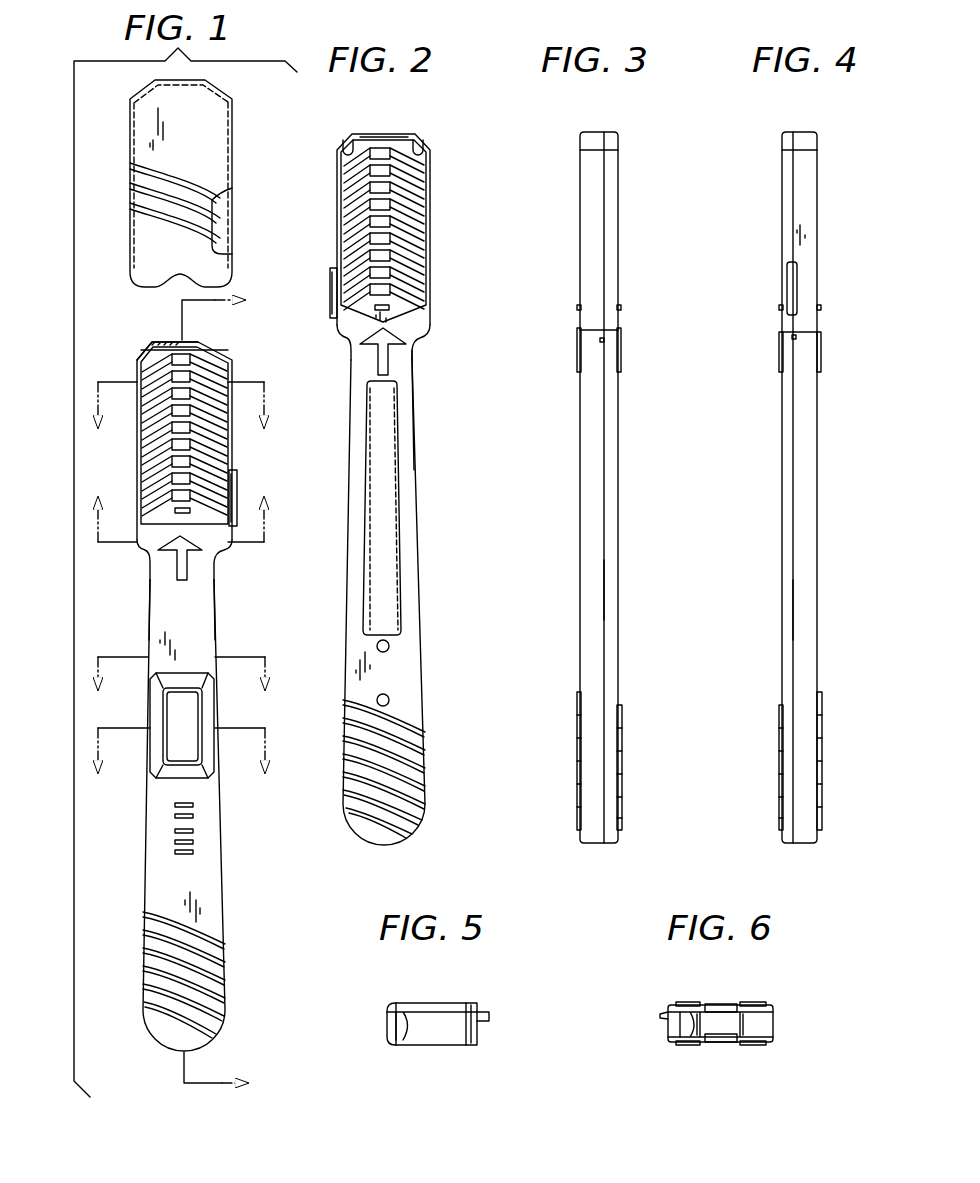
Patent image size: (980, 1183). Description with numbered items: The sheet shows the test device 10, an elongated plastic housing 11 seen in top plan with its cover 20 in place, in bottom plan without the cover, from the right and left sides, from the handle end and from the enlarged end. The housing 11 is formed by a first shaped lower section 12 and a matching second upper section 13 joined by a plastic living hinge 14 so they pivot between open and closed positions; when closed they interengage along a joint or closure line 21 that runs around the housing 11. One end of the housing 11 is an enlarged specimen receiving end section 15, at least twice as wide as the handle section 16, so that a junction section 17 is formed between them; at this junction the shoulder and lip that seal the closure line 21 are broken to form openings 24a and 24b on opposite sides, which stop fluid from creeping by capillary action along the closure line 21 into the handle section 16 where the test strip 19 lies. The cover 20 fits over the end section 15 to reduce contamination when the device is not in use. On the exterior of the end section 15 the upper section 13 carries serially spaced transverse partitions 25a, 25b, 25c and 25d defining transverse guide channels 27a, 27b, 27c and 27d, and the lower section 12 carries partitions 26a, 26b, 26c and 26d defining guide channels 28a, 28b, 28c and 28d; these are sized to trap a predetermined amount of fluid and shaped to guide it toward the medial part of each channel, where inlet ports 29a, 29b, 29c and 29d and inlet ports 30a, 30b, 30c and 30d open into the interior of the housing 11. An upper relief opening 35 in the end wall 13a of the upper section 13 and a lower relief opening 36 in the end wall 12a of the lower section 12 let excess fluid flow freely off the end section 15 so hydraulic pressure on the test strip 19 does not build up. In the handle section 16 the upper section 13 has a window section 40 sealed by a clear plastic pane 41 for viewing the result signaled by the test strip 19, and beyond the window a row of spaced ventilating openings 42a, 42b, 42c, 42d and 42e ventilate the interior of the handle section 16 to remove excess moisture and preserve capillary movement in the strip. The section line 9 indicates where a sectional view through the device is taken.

In FIG. 1, the section line 9 is at (226, 692).
In FIG. 1, the test device 10 is at (148, 727).
In FIG. 2, the test device 10 is at (390, 465).
In FIG. 3, the test device 10 is at (607, 487).
In FIG. 4, the test device 10 is at (812, 487).
In FIG. 5, the test device 10 is at (468, 1026).
In FIG. 6, the test device 10 is at (730, 1024).
In FIG. 1, the housing 11 is at (222, 643).
In FIG. 2, the housing 11 is at (426, 570).
In FIG. 3, the housing 11 is at (620, 428).
In FIG. 4, the housing 11 is at (820, 425).
In FIG. 5, the housing 11 is at (486, 1038).
In FIG. 6, the housing 11 is at (774, 1028).
In FIG. 1, the first shaped lower section 12 is at (184, 594).
In FIG. 2, the first shaped lower section 12 is at (420, 472).
In FIG. 2, the end wall of lower section 12a is at (347, 148).
In FIG. 1, the second shaped upper section 13 is at (212, 594).
In FIG. 1, the end wall of upper section 13a is at (145, 352).
In FIG. 1, the plastic living hinge 14 is at (238, 508).
In FIG. 2, the plastic living hinge 14 is at (332, 286).
In FIG. 4, the plastic living hinge 14 is at (788, 278).
In FIG. 5, the plastic living hinge 14 is at (490, 1016).
In FIG. 6, the plastic living hinge 14 is at (664, 1014).
In FIG. 1, the specimen receiving end section 15 is at (142, 464).
In FIG. 2, the specimen receiving end section 15 is at (434, 282).
In FIG. 3, the specimen receiving end section 15 is at (600, 228).
In FIG. 4, the specimen receiving end section 15 is at (800, 200).
In FIG. 1, the handle section 16 is at (222, 896).
In FIG. 2, the handle section 16 is at (412, 706).
In FIG. 3, the handle section 16 is at (602, 708).
In FIG. 4, the handle section 16 is at (800, 761).
In FIG. 2, the junction section 17 is at (420, 345).
In FIG. 4, the junction section 17 is at (812, 337).
In FIG. 3, the test strip 19 is at (588, 338).
In FIG. 1, the cover 20 is at (232, 142).
In FIG. 3, the joint or closure line 21 is at (608, 586).
In FIG. 4, the joint or closure line 21 is at (793, 613).
In FIG. 5, the joint or closure line 21 is at (398, 1042).
In FIG. 6, the joint or closure line 21 is at (688, 1020).
In FIG. 3, the opening 24a is at (604, 345).
In FIG. 4, the opening 24b is at (793, 337).
In FIG. 1, the transverse partition 25a is at (150, 370).
In FIG. 1, the transverse partition 25b is at (150, 388).
In FIG. 1, the transverse partition 25c is at (150, 405).
In FIG. 1, the transverse partition 25d is at (150, 422).
In FIG. 2, the transverse partition 26a is at (352, 160).
In FIG. 2, the transverse partition 26b is at (352, 178).
In FIG. 2, the transverse partition 26c is at (352, 196).
In FIG. 2, the transverse partition 26d is at (352, 214).
In FIG. 1, the transverse guide channel 27a is at (206, 366).
In FIG. 1, the transverse guide channel 27b is at (208, 390).
In FIG. 1, the transverse guide channel 27c is at (208, 405).
In FIG. 1, the transverse guide channel 27d is at (210, 422).
In FIG. 2, the transverse guide channel 28a is at (416, 158).
In FIG. 2, the transverse guide channel 28b is at (416, 182).
In FIG. 2, the transverse guide channel 28c is at (416, 200).
In FIG. 2, the transverse guide channel 28d is at (416, 226).
In FIG. 1, the inlet port 29a is at (184, 358).
In FIG. 1, the inlet port 29b is at (192, 375).
In FIG. 1, the inlet port 29c is at (192, 393).
In FIG. 1, the inlet port 29d is at (192, 410).
In FIG. 2, the inlet port 30a is at (385, 156).
In FIG. 2, the inlet port 30b is at (386, 172).
In FIG. 2, the inlet port 30c is at (386, 189).
In FIG. 2, the inlet port 30d is at (386, 206).
In FIG. 1, the upper outlet or relief opening 35 is at (158, 342).
In FIG. 6, the upper outlet or relief opening 35 is at (722, 1006).
In FIG. 2, the lower outlet or relief opening 36 is at (380, 135).
In FIG. 6, the lower outlet or relief opening 36 is at (722, 1042).
In FIG. 1, the window section 40 is at (234, 725).
In FIG. 1, the clear plastic pane 41 is at (190, 745).
In FIG. 1, the ventilating opening 42a is at (175, 806).
In FIG. 1, the ventilating opening 42b is at (175, 818).
In FIG. 1, the ventilating opening 42c is at (175, 832).
In FIG. 1, the ventilating opening 42d is at (175, 844).
In FIG. 1, the grip rib 42e is at (175, 855).